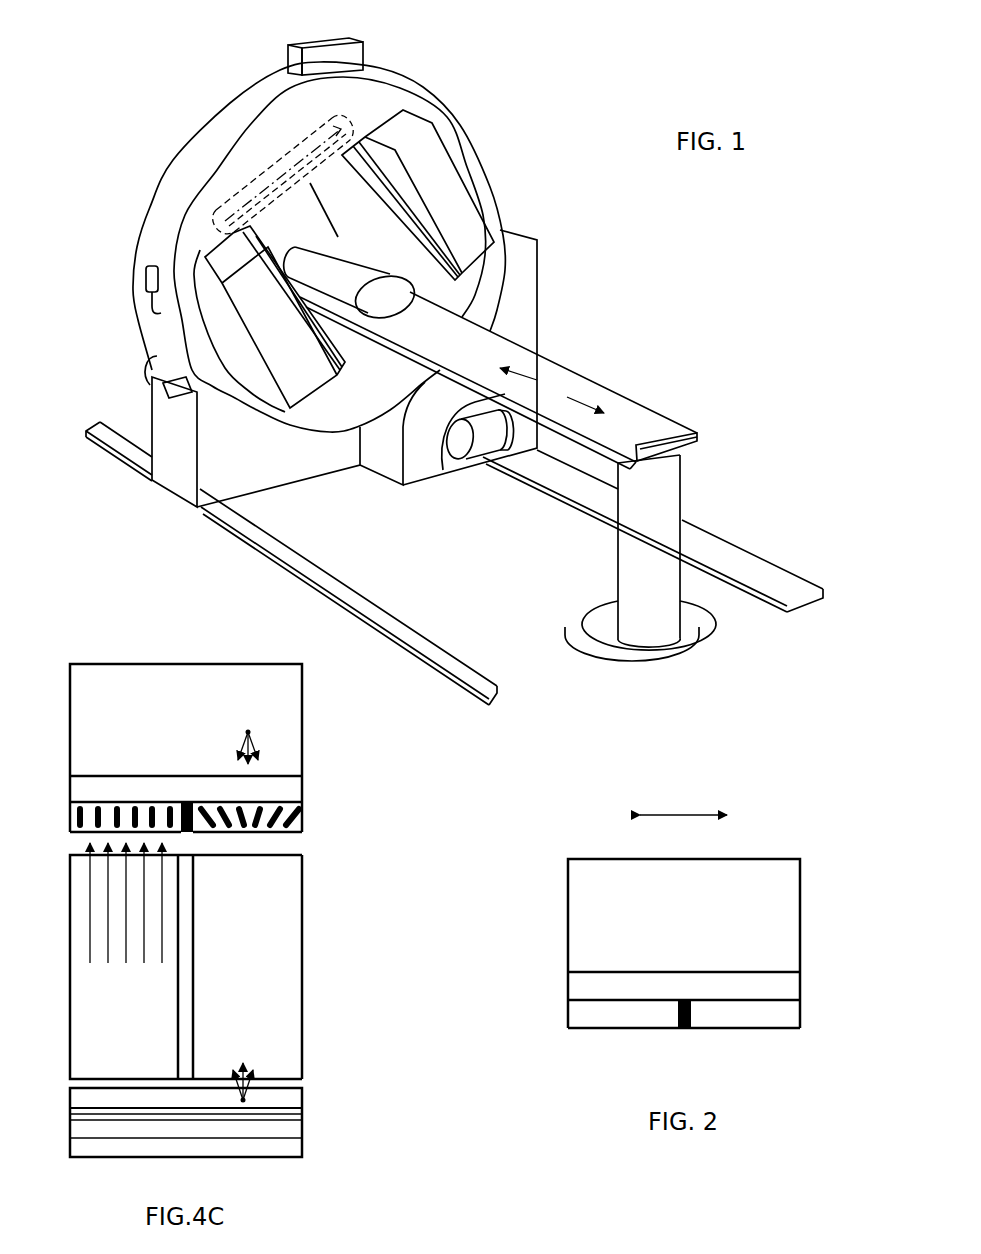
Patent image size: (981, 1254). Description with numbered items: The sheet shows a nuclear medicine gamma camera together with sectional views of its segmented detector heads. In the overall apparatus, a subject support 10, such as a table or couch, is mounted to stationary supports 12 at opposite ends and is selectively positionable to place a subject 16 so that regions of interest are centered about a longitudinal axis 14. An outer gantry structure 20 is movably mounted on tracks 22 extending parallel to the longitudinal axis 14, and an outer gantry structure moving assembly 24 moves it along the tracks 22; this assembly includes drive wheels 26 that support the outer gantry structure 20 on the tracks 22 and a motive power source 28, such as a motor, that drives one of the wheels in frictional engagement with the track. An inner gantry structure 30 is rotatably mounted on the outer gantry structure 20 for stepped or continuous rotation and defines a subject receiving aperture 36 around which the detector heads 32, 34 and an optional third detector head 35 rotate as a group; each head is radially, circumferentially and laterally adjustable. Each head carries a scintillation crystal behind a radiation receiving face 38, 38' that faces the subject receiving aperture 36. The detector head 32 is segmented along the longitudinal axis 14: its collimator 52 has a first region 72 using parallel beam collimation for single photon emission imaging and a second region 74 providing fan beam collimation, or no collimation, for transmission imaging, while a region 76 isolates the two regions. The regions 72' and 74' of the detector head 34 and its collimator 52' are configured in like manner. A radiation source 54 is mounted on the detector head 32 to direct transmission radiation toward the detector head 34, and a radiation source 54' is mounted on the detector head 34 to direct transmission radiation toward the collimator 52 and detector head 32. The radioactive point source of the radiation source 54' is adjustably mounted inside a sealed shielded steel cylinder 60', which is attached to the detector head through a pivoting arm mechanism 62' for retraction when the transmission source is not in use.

In FIG. 1, the subject support 10 is at (622, 405).
In FIG. 1, the stationary supports 12 is at (150, 368).
In FIG. 1, the longitudinal axis 14 is at (608, 332).
In FIG. 2, the longitudinal axis 14 is at (693, 812).
In FIG. 1, the subject 16 is at (385, 300).
In FIG. 1, the outer gantry structure 20 is at (300, 468).
In FIG. 1, the tracks 22 is at (732, 568).
In FIG. 1, the outer gantry structure moving assembly 24 is at (482, 474).
In FIG. 1, the drive wheels 26 is at (496, 452).
In FIG. 1, the motive power source 28 is at (472, 435).
In FIG. 1, the inner gantry structure 30 is at (370, 110).
In FIG. 1, the detector head 32 is at (451, 206).
In FIG. 4C, the detector head 32 is at (197, 731).
In FIG. 2, the detector head 32 is at (693, 929).
In FIG. 1, the detector head 34 is at (278, 339).
In FIG. 4C, the detector head 34 is at (70, 910).
In FIG. 1, the third detector head 35 is at (230, 197).
In FIG. 1, the subject receiving aperture 36 is at (312, 232).
In FIG. 1, the radiation receiving face 38 is at (464, 211).
In FIG. 4C, the radiation receiving face 38 is at (154, 802).
In FIG. 2, the radiation receiving face 38 is at (645, 1000).
In FIG. 1, the radiation receiving face 38' is at (294, 326).
In FIG. 1, the collimator 52 is at (412, 224).
In FIG. 4C, the collimator 52 is at (203, 803).
In FIG. 2, the collimator 52 is at (822, 994).
In FIG. 1, the collimator 52' is at (327, 314).
In FIG. 4C, the collimator 52' is at (95, 967).
In FIG. 4C, the radiation source 54 is at (288, 733).
In FIG. 4C, the radiation source 54' is at (292, 1098).
In FIG. 4C, the shielded steel cylinder 60' is at (169, 1122).
In FIG. 4C, the pivoting arm mechanism 62' is at (186, 1144).
In FIG. 4C, the first region 72 is at (101, 841).
In FIG. 2, the first region 72 is at (617, 1043).
In FIG. 4C, the first region 72' is at (126, 926).
In FIG. 4C, the second region 74 is at (277, 841).
In FIG. 2, the second region 74 is at (750, 1046).
In FIG. 4C, the second region 74' is at (247, 967).
In FIG. 4C, the region 76 is at (187, 802).
In FIG. 2, the region 76 is at (683, 1030).